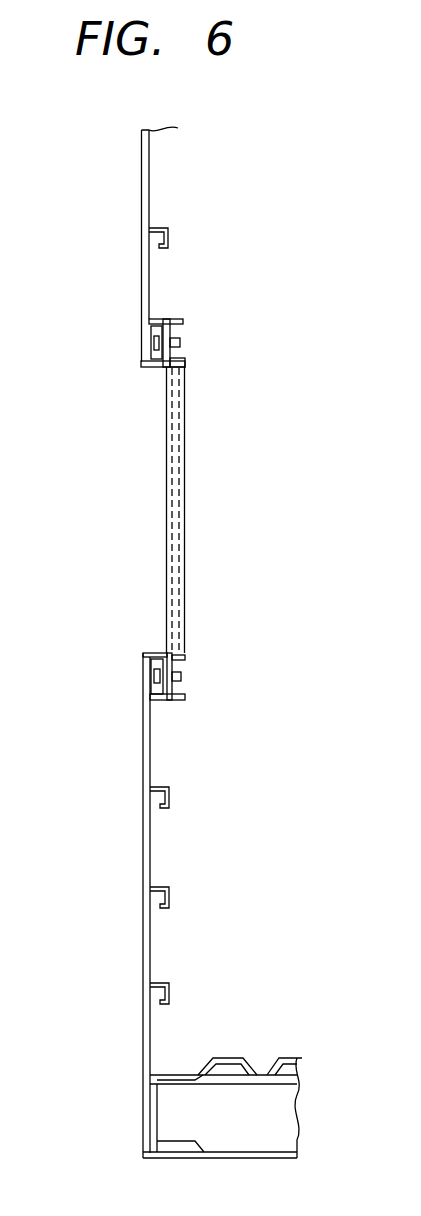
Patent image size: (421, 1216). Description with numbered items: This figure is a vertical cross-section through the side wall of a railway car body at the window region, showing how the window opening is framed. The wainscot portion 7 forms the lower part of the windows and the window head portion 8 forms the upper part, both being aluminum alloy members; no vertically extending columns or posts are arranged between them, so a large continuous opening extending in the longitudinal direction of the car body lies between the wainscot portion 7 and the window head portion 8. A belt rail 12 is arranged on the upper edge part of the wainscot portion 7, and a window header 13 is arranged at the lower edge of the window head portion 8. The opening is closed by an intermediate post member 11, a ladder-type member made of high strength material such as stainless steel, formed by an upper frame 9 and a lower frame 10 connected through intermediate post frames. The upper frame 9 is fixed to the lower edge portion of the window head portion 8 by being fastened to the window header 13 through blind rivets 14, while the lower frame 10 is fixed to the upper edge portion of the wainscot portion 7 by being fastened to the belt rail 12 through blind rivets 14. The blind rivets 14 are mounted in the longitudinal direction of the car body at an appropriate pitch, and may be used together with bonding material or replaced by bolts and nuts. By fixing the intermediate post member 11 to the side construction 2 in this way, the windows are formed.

The side construction 2 is at (143, 1033).
The wainscot portion 7 is at (142, 740).
The window head portion 8 is at (141, 268).
The upper frame 9 is at (183, 322).
The lower frame 10 is at (183, 700).
The intermediate post member 11 is at (184, 545).
The belt rail 12 is at (156, 655).
The window header 13 is at (153, 367).
The blind rivets 14 is at (182, 343).